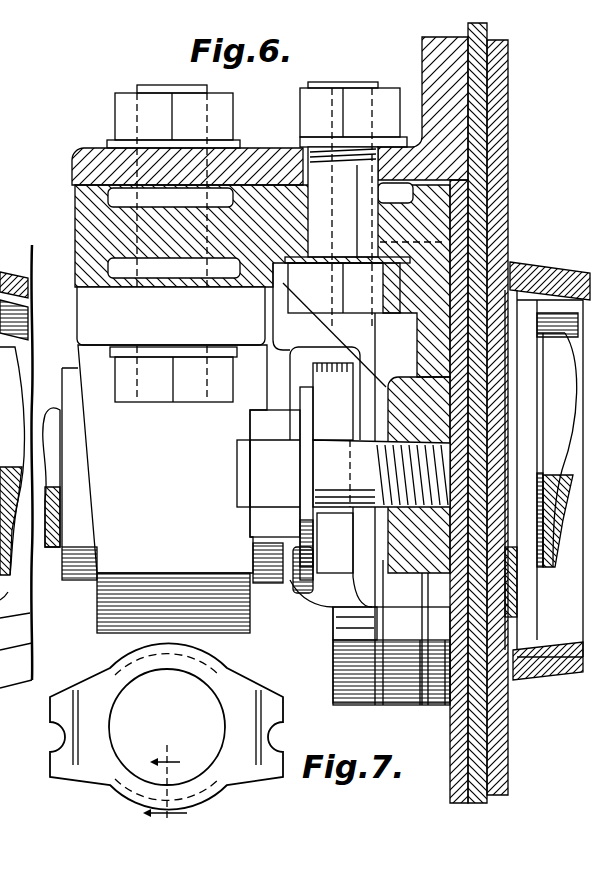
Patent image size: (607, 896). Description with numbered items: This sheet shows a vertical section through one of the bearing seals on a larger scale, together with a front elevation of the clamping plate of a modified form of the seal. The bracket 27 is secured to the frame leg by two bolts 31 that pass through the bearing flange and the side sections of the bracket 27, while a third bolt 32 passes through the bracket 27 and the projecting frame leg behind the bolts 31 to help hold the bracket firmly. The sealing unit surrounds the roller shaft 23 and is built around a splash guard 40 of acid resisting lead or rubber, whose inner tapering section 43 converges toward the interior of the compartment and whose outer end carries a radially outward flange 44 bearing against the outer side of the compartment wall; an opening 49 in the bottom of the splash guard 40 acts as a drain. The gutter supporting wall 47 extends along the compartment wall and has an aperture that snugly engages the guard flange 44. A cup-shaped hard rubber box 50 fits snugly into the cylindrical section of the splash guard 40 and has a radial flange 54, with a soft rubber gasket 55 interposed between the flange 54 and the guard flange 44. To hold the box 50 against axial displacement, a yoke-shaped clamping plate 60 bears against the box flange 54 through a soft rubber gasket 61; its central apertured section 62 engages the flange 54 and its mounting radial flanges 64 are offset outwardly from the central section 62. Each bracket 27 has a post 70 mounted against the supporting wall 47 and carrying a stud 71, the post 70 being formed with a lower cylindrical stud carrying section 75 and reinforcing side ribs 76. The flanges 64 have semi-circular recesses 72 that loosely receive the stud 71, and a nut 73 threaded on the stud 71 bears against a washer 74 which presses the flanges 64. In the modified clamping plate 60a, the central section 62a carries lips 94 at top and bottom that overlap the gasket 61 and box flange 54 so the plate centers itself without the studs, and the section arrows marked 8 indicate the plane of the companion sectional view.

In FIG. 6, the roller shaft 23 is at (50, 458).
In FIG. 6, the bracket 27 is at (73, 201).
In FIG. 6, the bolt 31 is at (147, 88).
In FIG. 6, the third bolt 32 is at (323, 86).
In FIG. 6, the splash guard 40 is at (8, 268).
In FIG. 6, the tapering section 43 is at (15, 285).
In FIG. 6, the flange 44 is at (446, 706).
In FIG. 6, the supporting wall 47 is at (453, 778).
In FIG. 6, the opening 49 is at (22, 660).
In FIG. 6, the box 50 is at (12, 499).
In FIG. 6, the flange 54 is at (392, 705).
In FIG. 6, the gasket 55 is at (427, 705).
In FIG. 6, the clamping plate 60 is at (331, 694).
In FIG. 7, the clamping plate 60a is at (243, 773).
In FIG. 6, the gasket 61 is at (377, 619).
In FIG. 6, the central apertured section 62 is at (333, 653).
In FIG. 7, the central section 62a is at (140, 678).
In FIG. 6, the mounting radial flange 64 is at (323, 530).
In FIG. 6, the flange or post 70 is at (403, 578).
In FIG. 6, the stud 71 is at (237, 461).
In FIG. 6, the semi-circular recess 72 is at (333, 438).
In FIG. 6, the nut 73 is at (258, 524).
In FIG. 6, the washer 74 is at (305, 421).
In FIG. 6, the stud carrying section 75 is at (397, 377).
In FIG. 6, the reinforcing side rib 76 is at (320, 323).
In FIG. 7, the lips or flanges 94 is at (212, 663).
In FIG. 7, the section line 8 is at (171, 784).